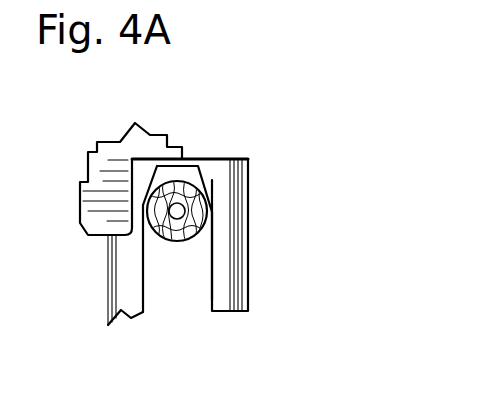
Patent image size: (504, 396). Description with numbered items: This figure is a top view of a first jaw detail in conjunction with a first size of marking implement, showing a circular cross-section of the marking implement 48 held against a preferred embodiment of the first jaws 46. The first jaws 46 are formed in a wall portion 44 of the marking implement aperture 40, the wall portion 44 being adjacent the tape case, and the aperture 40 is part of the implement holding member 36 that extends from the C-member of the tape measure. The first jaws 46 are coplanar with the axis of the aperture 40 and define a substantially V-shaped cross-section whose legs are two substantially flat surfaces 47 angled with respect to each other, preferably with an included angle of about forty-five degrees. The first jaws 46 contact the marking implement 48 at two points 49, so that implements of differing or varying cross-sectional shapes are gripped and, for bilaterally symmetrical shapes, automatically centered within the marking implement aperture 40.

The implement holding member 36 is at (96, 302).
The marking implement aperture 40 is at (193, 253).
The wall portion 44 is at (207, 178).
The first jaws 46 is at (200, 283).
The flat surfaces 47 is at (205, 178).
The marking implement 48 is at (183, 247).
The points of contact 49 is at (152, 198).